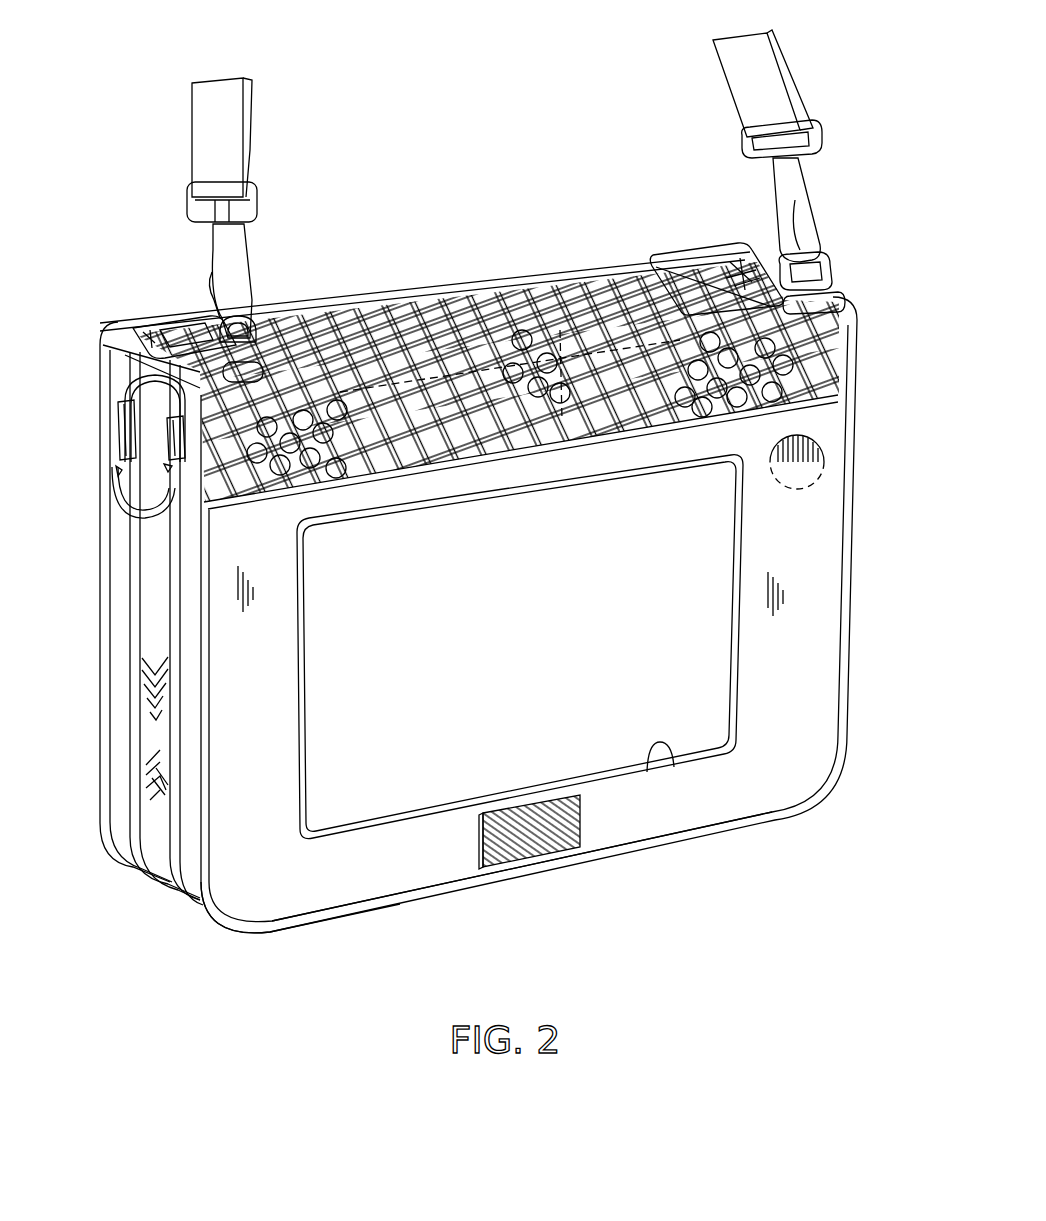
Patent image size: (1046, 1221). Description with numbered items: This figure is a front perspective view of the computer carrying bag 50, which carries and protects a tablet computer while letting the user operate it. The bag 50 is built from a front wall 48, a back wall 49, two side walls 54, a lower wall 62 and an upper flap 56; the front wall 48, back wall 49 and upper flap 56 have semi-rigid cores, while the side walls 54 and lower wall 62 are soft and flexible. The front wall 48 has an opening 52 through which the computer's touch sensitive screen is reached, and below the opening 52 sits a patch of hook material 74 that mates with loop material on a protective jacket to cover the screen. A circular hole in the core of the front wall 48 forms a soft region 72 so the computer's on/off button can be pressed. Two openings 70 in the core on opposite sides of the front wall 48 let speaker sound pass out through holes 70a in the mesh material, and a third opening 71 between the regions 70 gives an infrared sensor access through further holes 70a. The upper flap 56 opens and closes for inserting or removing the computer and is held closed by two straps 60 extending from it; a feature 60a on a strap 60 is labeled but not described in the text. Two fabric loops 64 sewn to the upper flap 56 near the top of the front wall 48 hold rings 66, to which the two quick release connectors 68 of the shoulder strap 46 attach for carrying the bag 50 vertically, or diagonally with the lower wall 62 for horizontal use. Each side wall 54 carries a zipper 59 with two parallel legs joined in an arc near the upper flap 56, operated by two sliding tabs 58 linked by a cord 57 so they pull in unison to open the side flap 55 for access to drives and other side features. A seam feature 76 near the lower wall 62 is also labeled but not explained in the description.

The shoulder strap 46 is at (232, 118).
The front wall 48 is at (770, 800).
The back wall 49 is at (516, 703).
The computer carrying bag 50 is at (471, 150).
The opening 52 is at (668, 760).
The side walls 54 is at (116, 690).
The side flap 55 is at (148, 758).
The upper flap 56 is at (542, 305).
The cord 57 is at (115, 508).
The sliding tabs 58 is at (115, 445).
The zipper 59 is at (130, 620).
The straps 60 is at (718, 255).
The slot 60a is at (178, 322).
The lower wall 62 is at (263, 934).
The loops 64 is at (230, 385).
The rings 66 is at (252, 322).
The quick release connectors 68 is at (248, 248).
The openings 70 is at (312, 497).
The holes 70a is at (373, 470).
The third opening 71 is at (566, 440).
The soft region 72 is at (800, 493).
The patch of hook material 74 is at (540, 850).
The seam 76 is at (360, 897).